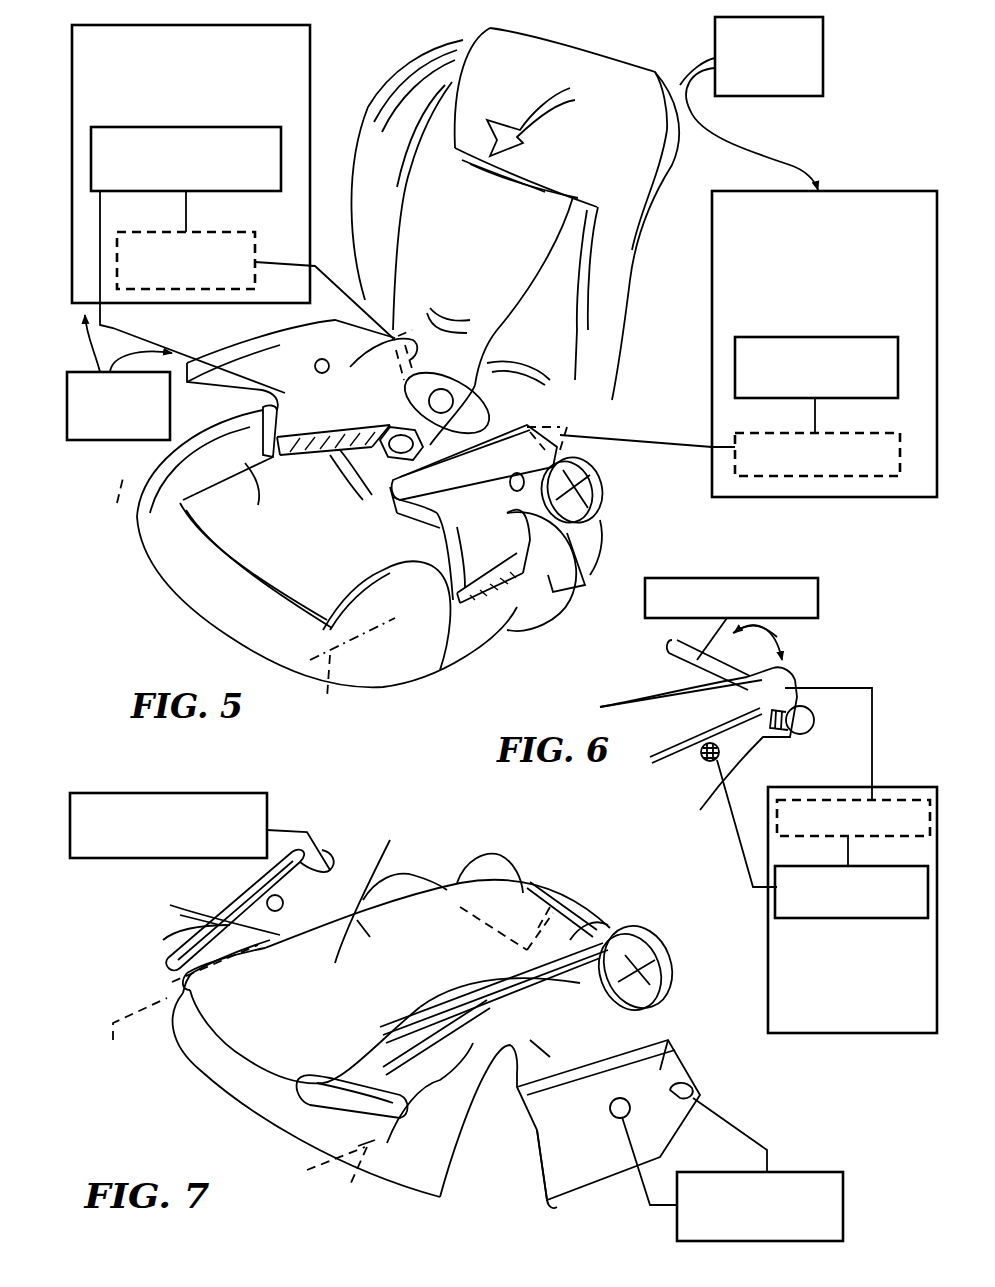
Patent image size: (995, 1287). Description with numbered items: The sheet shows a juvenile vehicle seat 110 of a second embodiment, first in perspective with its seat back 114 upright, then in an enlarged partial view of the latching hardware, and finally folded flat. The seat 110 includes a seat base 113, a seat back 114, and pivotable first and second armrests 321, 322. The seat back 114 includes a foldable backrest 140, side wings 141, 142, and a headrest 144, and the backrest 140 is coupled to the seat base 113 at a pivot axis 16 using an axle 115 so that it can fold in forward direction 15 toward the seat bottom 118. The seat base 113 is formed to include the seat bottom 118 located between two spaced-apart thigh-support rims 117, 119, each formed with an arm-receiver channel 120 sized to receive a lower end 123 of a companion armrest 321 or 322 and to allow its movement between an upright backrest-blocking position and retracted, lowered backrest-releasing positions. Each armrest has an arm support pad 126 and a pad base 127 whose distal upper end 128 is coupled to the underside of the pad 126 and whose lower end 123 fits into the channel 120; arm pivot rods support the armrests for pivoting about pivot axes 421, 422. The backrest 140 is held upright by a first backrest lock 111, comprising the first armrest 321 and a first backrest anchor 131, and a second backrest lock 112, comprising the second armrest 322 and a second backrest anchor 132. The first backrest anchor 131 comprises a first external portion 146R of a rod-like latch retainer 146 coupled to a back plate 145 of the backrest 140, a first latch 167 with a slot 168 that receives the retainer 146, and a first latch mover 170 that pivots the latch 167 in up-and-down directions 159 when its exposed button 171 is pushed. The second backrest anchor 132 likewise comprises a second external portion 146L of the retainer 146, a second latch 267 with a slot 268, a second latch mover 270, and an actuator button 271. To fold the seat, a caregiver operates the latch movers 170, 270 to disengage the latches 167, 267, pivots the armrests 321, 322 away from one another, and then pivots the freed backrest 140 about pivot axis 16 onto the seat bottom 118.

In FIG. 5, the forward direction 15 is at (518, 112).
In FIG. 7, the forward direction 15 is at (377, 850).
In FIG. 5, the pivot axis 16 is at (610, 512).
In FIG. 7, the pivot axis 16 is at (458, 857).
In FIG. 5, the juvenile vehicle seat 110 is at (392, 63).
In FIG. 7, the juvenile vehicle seat 110 is at (333, 832).
In FIG. 5, the first backrest lock 111 is at (716, 55).
In FIG. 5, the second backrest lock 112 is at (85, 443).
In FIG. 5, the seat base 113 is at (231, 638).
In FIG. 7, the seat base 113 is at (262, 1123).
In FIG. 5, the seat back 114 is at (359, 160).
In FIG. 7, the seat back 114 is at (178, 987).
In FIG. 5, the axle 115 is at (590, 482).
In FIG. 5, the thigh-support rim 117 is at (363, 580).
In FIG. 5, the seat bottom 118 is at (253, 553).
In FIG. 5, the thigh-support rim 119 is at (246, 497).
In FIG. 5, the arm-receiver channel 120 is at (278, 432).
In FIG. 7, the arm-receiver channel 120 is at (338, 898).
In FIG. 5, the lower end 123 is at (248, 460).
In FIG. 7, the lower end 123 is at (360, 915).
In FIG. 5, the arm support pad 126 is at (296, 330).
In FIG. 7, the arm support pad 126 is at (175, 918).
In FIG. 5, the pad base 127 is at (262, 447).
In FIG. 7, the pad base 127 is at (220, 922).
In FIG. 5, the distal upper end 128 is at (471, 501).
In FIG. 7, the distal upper end 128 is at (233, 912).
In FIG. 5, the first backrest anchor 131 is at (855, 191).
In FIG. 6, the first backrest anchor 131 is at (858, 1034).
In FIG. 5, the second backrest anchor 132 is at (310, 60).
In FIG. 5, the foldable backrest 140 is at (527, 333).
In FIG. 6, the foldable backrest 140 is at (660, 653).
In FIG. 7, the foldable backrest 140 is at (516, 905).
In FIG. 5, the side wing 141 is at (688, 171).
In FIG. 7, the side wing 141 is at (330, 1113).
In FIG. 5, the side wing 142 is at (463, 50).
In FIG. 7, the side wing 142 is at (183, 978).
In FIG. 5, the headrest 144 is at (548, 55).
In FIG. 7, the headrest 144 is at (208, 1062).
In FIG. 5, the back plate 145 is at (517, 272).
In FIG. 6, the back plate 145 is at (822, 598).
In FIG. 7, the back plate 145 is at (408, 984).
In FIG. 6, the latch retainer 146 is at (690, 658).
In FIG. 7, the latch retainer 146 is at (557, 907).
In FIG. 7, the second external portion 146L is at (423, 874).
In FIG. 7, the first external portion 146R is at (590, 940).
In FIG. 6, the up-and-down directions 159 is at (790, 640).
In FIG. 5, the first latch 167 is at (850, 432).
In FIG. 6, the first latch 167 is at (790, 677).
In FIG. 7, the first latch 167 is at (701, 1095).
In FIG. 6, the slot 168 is at (782, 726).
In FIG. 5, the first latch mover 170 is at (831, 337).
In FIG. 6, the first latch mover 170 is at (855, 918).
In FIG. 7, the first latch mover 170 is at (800, 1172).
In FIG. 7, the button 171 is at (610, 1105).
In FIG. 5, the second latch 267 is at (258, 241).
In FIG. 7, the second latch 267 is at (320, 905).
In FIG. 7, the slot 268 is at (322, 880).
In FIG. 5, the second latch mover 270 is at (215, 127).
In FIG. 7, the second latch mover 270 is at (168, 793).
In FIG. 5, the actuator button 271 is at (316, 368).
In FIG. 7, the actuator button 271 is at (277, 912).
In FIG. 5, the first armrest 321 is at (392, 515).
In FIG. 7, the first armrest 321 is at (542, 1208).
In FIG. 5, the second armrest 322 is at (250, 337).
In FIG. 7, the second armrest 322 is at (163, 940).
In FIG. 5, the pivot axis 421 is at (330, 695).
In FIG. 7, the pivot axis 421 is at (318, 1168).
In FIG. 5, the pivot axis 422 is at (130, 476).
In FIG. 7, the pivot axis 422 is at (122, 1023).